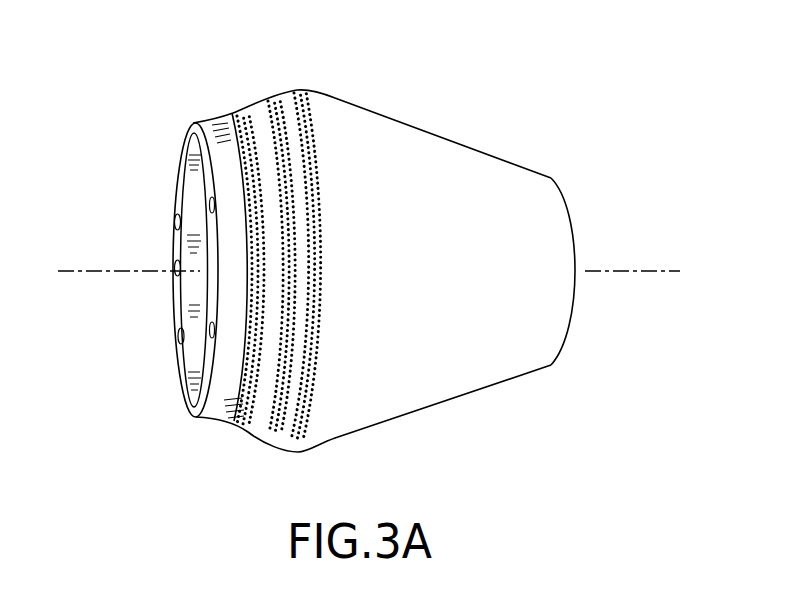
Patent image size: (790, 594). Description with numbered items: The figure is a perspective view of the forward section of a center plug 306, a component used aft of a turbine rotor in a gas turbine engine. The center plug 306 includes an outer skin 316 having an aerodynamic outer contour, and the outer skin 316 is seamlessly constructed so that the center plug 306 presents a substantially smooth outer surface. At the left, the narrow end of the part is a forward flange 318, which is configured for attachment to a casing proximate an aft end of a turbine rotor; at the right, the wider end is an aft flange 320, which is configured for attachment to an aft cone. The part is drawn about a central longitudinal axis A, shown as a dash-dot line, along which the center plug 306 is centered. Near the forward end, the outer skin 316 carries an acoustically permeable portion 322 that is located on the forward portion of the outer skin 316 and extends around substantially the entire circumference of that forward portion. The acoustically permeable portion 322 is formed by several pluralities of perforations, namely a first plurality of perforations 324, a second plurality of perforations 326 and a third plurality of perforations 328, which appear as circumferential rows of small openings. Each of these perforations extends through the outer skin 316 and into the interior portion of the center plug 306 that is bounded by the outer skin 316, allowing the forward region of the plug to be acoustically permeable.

The center plug 306 is at (558, 79).
The outer skin 316 is at (442, 382).
The forward flange 318 is at (175, 335).
The aft flange 320 is at (568, 220).
The acoustically permeable portion 322 is at (237, 460).
The first plurality of perforations 324 is at (235, 115).
The second plurality of perforations 326 is at (268, 98).
The third plurality of perforations 328 is at (293, 92).
The central longitudinal axis A is at (633, 273).